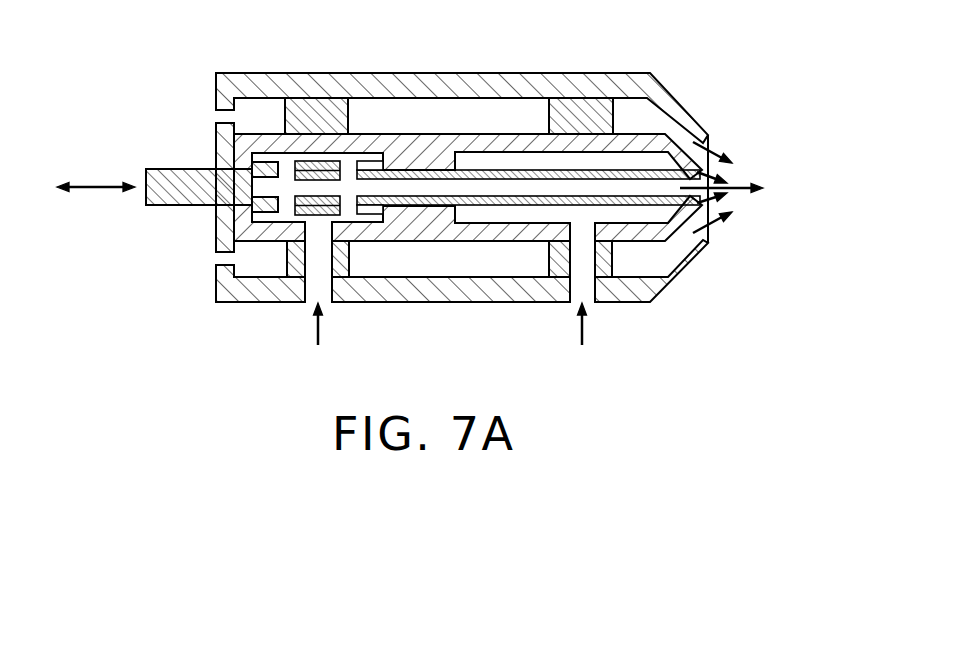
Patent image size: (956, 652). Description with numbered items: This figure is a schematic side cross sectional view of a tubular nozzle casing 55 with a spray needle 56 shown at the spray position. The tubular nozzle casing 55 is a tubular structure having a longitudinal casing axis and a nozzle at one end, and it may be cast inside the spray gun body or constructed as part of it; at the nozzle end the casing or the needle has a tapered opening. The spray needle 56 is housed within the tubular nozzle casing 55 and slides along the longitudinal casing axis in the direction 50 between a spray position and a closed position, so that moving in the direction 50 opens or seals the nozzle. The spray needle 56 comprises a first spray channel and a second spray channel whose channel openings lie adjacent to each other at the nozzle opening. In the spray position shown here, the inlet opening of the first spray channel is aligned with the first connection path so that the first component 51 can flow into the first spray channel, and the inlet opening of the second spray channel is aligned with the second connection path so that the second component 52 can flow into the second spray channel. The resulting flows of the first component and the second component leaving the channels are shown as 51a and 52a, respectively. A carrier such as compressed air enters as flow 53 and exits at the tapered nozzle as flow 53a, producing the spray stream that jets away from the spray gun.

The tubular nozzle casing 55 is at (501, 49).
The carrier flow 53 is at (192, 117).
The sliding direction of spray needle 50 is at (100, 178).
The spray needle 56 is at (136, 226).
The first component 51 is at (316, 334).
The second component 52 is at (585, 334).
The flow of first component 51a is at (740, 185).
The flow of second component 52a is at (728, 196).
The carrier outlet flow 53a is at (722, 152).